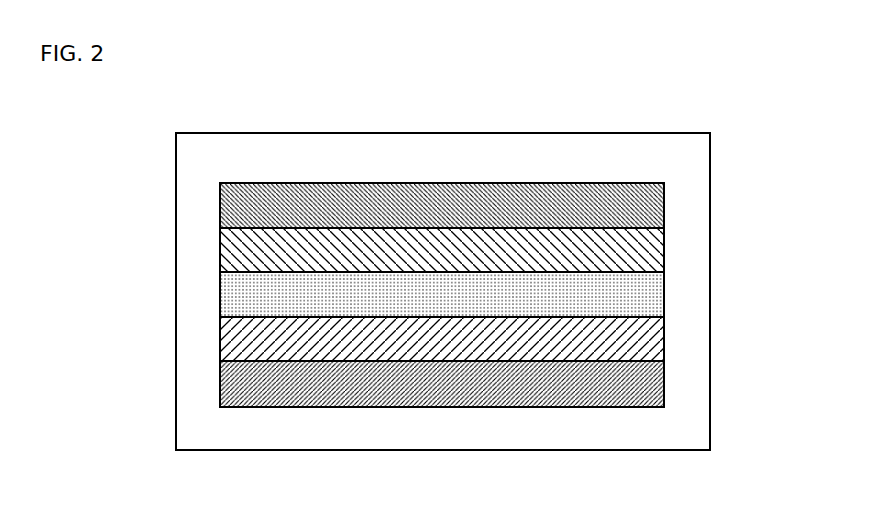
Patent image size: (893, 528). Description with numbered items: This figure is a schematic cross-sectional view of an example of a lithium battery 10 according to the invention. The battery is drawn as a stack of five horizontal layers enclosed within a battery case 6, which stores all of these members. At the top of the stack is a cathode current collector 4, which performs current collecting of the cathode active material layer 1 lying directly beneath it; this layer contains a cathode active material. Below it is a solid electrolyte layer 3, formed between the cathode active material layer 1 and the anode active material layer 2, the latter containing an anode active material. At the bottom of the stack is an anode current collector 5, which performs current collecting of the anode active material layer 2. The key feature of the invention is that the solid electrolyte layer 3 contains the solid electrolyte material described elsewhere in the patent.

The lithium battery 10 is at (694, 92).
The battery case 6 is at (685, 154).
The cathode current collector 4 is at (650, 196).
The cathode active material layer 1 is at (650, 240).
The solid electrolyte layer 3 is at (650, 285).
The anode active material layer 2 is at (650, 329).
The anode current collector 5 is at (650, 372).